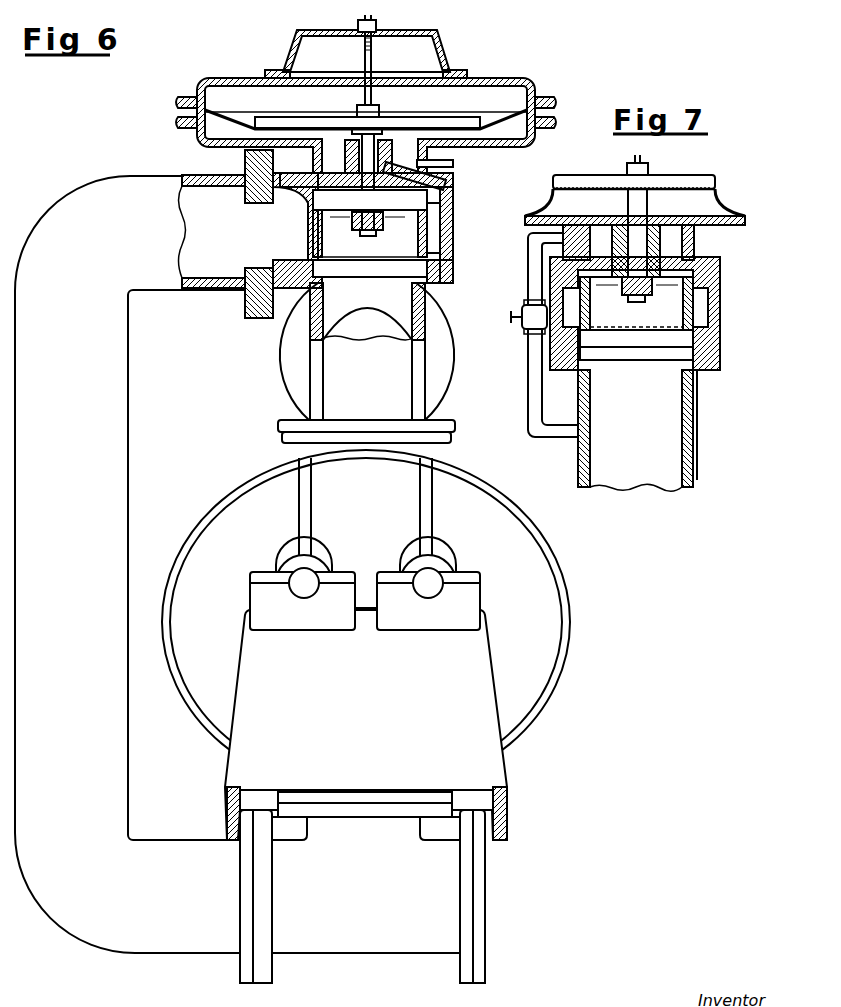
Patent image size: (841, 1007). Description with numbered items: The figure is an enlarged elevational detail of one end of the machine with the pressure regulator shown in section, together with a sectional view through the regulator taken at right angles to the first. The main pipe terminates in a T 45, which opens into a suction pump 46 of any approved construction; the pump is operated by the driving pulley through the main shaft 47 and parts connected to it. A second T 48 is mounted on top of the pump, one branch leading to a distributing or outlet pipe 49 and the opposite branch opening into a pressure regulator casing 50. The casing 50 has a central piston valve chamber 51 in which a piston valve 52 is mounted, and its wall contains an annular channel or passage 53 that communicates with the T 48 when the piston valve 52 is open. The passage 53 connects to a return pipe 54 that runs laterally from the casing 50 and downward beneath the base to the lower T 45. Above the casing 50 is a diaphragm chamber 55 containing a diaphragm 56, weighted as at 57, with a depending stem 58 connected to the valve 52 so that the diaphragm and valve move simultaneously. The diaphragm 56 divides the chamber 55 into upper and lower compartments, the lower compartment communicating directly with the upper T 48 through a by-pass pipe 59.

In FIG. 6, the T 45 is at (366, 796).
In FIG. 6, the suction pump 46 is at (366, 622).
In FIG. 6, the main shaft 47 is at (432, 582).
In FIG. 6, the second T 48 is at (415, 385).
In FIG. 7, the second T 48 is at (637, 430).
In FIG. 6, the distributing or outlet pipe 49 is at (395, 325).
In FIG. 6, the pressure regulator casing 50 is at (445, 268).
In FIG. 7, the pressure regulator casing 50 is at (713, 357).
In FIG. 6, the central piston valve chamber 51 is at (413, 200).
In FIG. 7, the central piston valve chamber 51 is at (700, 328).
In FIG. 6, the piston valve 52 is at (370, 234).
In FIG. 7, the piston valve 52 is at (636, 303).
In FIG. 6, the annular channel or passage 53 is at (436, 236).
In FIG. 7, the annular channel or passage 53 is at (703, 315).
In FIG. 6, the return pipe 54 is at (115, 403).
In FIG. 6, the diaphragm chamber 55 is at (512, 100).
In FIG. 7, the diaphragm chamber 55 is at (745, 214).
In FIG. 6, the diaphragm 56 is at (530, 137).
In FIG. 7, the diaphragm 56 is at (712, 194).
In FIG. 6, the weight 57 is at (438, 118).
In FIG. 7, the weight 57 is at (688, 180).
In FIG. 6, the depending stem 58 is at (436, 177).
In FIG. 7, the depending stem 58 is at (640, 237).
In FIG. 7, the by-pass pipe 59 is at (528, 405).